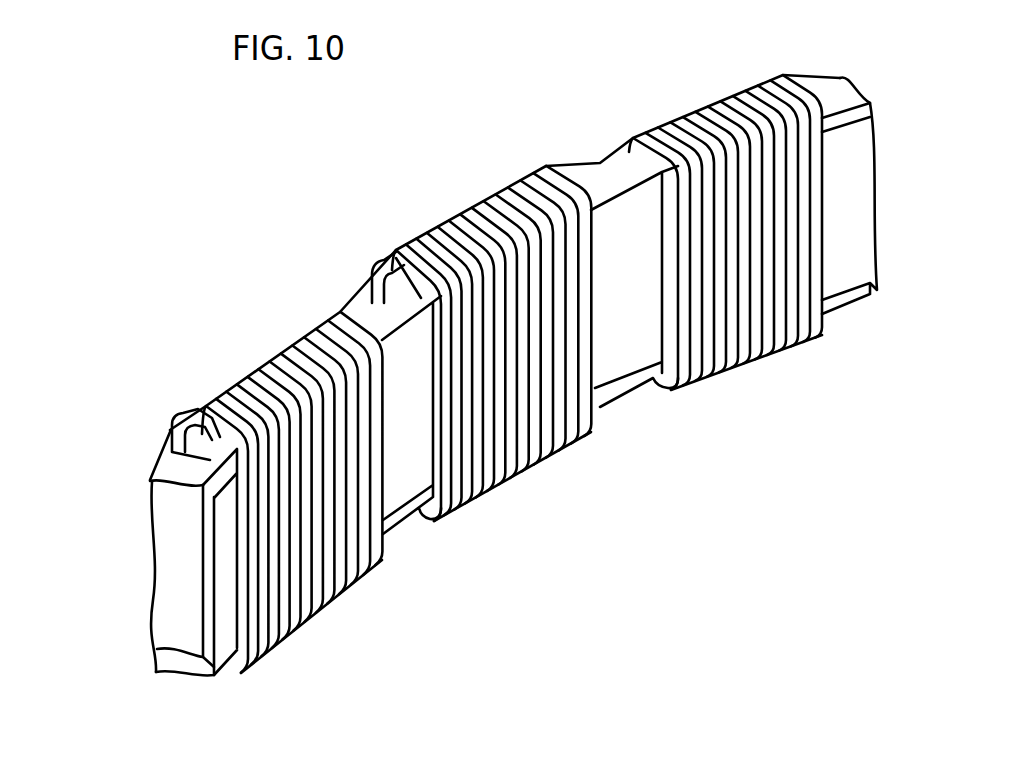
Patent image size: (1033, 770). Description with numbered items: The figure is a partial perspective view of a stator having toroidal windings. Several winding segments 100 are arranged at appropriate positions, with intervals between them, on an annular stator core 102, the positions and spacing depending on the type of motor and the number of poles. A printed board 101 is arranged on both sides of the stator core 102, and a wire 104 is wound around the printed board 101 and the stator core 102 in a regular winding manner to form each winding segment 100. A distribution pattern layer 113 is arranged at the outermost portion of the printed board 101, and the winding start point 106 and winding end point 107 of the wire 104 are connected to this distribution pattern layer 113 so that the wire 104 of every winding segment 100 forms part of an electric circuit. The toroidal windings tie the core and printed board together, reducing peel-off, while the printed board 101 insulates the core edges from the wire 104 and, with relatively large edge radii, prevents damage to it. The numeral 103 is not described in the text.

The winding segment 100 is at (340, 596).
The printed board 101 is at (162, 487).
The stator core 102 is at (177, 562).
The core 103 is at (334, 231).
The wire 104 is at (816, 170).
The winding start point 106 is at (210, 415).
The winding end point 107 is at (180, 415).
The distribution pattern layer 113 is at (357, 313).